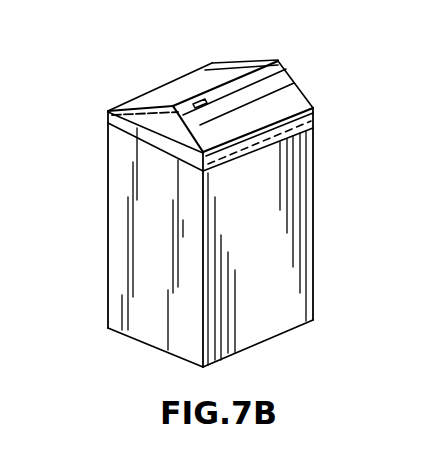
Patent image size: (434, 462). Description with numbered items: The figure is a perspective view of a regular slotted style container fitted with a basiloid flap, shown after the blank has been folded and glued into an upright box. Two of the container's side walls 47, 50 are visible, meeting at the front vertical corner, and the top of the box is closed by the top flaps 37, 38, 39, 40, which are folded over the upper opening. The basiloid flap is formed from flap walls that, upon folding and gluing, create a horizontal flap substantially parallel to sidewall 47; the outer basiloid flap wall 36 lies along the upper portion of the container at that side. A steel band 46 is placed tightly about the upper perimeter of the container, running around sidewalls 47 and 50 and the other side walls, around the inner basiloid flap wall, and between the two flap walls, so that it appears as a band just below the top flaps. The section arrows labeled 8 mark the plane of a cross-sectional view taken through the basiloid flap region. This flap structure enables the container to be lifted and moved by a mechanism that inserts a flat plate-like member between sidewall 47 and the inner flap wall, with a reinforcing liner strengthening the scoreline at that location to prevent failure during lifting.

The section line 8- 8 is at (233, 145).
The basiloid flap wall 36 is at (318, 111).
The top flap 37 is at (288, 90).
The top flap 38 is at (278, 64).
The top flap 39 is at (185, 82).
The top flap 40 is at (117, 128).
The steel band 46 is at (168, 156).
The side wall 47 is at (292, 267).
The side wall 50 is at (118, 232).